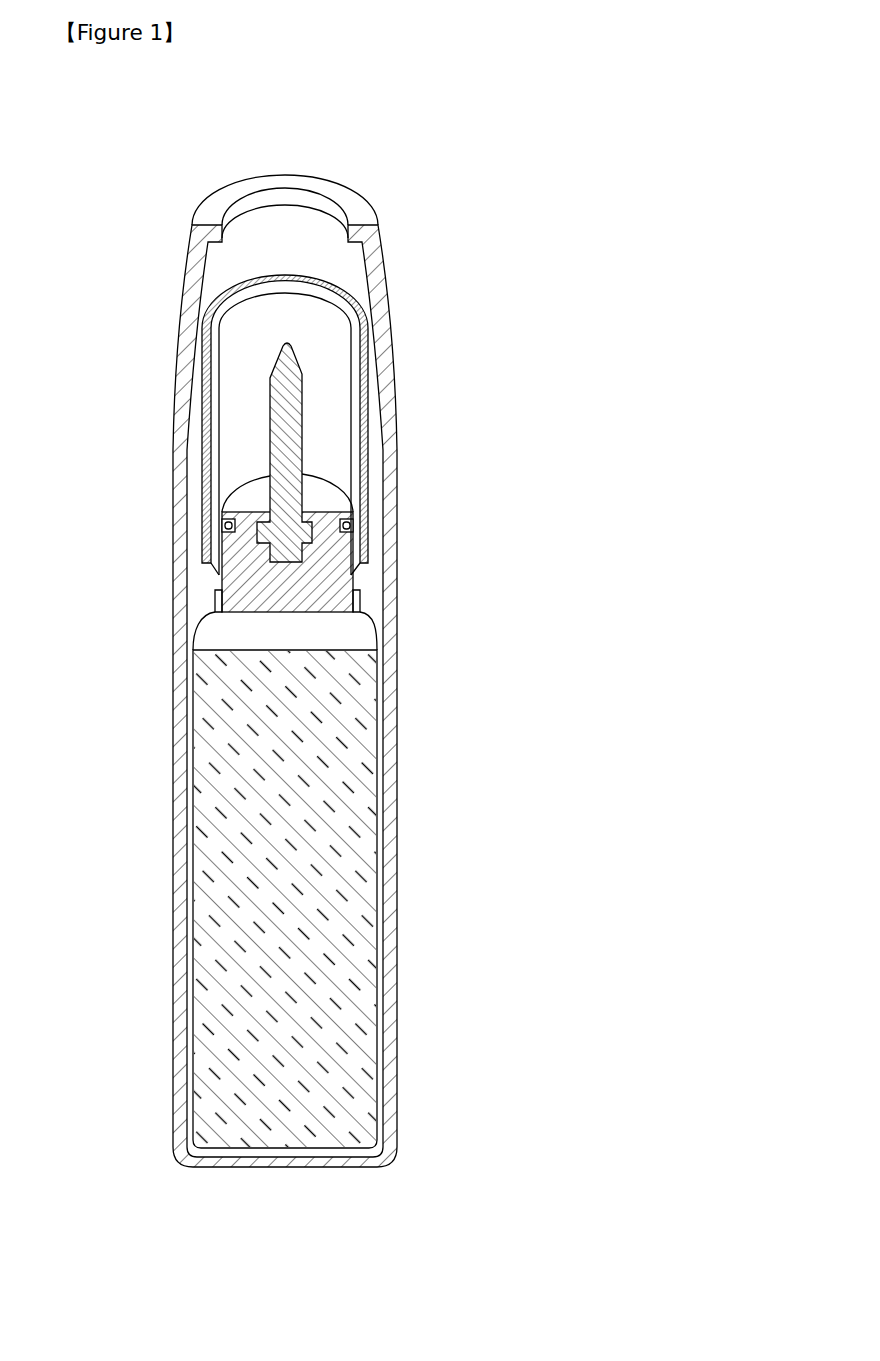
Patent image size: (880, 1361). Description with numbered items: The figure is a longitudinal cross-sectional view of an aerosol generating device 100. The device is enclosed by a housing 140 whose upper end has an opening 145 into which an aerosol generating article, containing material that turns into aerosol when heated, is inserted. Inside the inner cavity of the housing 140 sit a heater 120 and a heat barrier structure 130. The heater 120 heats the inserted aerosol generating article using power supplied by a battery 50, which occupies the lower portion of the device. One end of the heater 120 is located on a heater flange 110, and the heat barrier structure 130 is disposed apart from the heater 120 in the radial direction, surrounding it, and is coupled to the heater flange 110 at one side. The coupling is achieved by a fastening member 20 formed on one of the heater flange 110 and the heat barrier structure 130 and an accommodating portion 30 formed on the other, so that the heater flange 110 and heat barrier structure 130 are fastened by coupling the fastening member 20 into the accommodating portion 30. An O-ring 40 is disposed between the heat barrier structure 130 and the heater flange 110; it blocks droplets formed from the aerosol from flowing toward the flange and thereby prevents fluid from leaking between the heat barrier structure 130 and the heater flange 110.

The aerosol generating device 100 is at (448, 250).
The housing 140 is at (185, 373).
The opening 145 is at (290, 198).
The heat barrier structure 130 is at (352, 357).
The heater 120 is at (284, 360).
The heater flange 110 is at (303, 593).
The fastening member 20 is at (218, 588).
The O-ring 40 is at (352, 527).
The accommodating portion 30 is at (355, 590).
The battery 50 is at (345, 932).